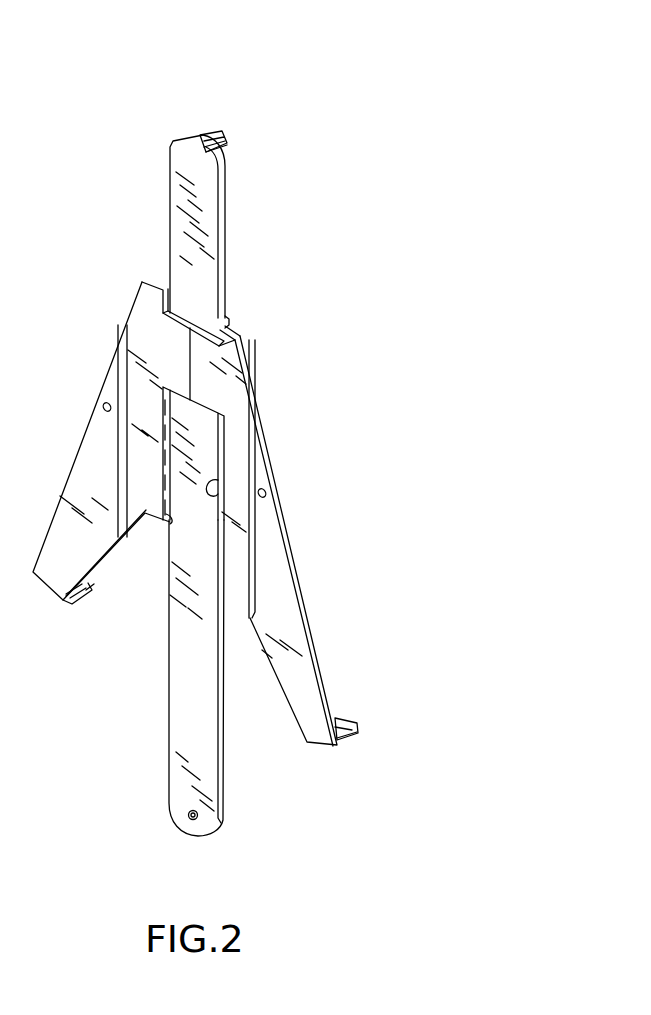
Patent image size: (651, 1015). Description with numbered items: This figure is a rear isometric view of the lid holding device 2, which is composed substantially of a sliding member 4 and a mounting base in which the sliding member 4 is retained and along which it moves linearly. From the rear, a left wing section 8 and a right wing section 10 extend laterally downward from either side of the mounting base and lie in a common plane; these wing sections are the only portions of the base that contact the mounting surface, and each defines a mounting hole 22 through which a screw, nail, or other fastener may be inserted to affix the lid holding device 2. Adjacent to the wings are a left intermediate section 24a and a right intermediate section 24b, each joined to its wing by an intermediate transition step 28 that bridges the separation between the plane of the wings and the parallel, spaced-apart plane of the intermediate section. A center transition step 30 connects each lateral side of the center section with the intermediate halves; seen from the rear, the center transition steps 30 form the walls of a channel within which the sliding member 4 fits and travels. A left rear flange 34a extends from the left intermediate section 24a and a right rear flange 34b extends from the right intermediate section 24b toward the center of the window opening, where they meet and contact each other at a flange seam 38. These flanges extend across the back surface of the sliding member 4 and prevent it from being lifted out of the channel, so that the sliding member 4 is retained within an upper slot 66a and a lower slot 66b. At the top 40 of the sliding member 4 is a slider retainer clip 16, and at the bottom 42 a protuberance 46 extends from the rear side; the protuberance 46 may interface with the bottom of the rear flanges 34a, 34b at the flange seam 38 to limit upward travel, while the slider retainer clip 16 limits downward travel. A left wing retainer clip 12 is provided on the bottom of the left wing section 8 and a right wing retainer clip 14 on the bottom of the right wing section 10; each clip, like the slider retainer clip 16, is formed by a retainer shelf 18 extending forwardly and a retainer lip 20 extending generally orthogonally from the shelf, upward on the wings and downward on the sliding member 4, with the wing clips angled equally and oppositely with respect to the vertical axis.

The lid holding device 2 is at (296, 200).
The sliding member 4 is at (224, 247).
The left wing section 8 is at (288, 598).
The right wing section 10 is at (74, 476).
The left wing retainer clip 12 is at (358, 730).
The right wing retainer clip 14 is at (70, 604).
The slider retainer clip 16 is at (218, 133).
The retainer shelf 18 is at (206, 136).
The retainer lip 20 is at (228, 144).
The mounting hole 22 is at (106, 407).
The left intermediate section 24a is at (228, 430).
The right intermediate section 24b is at (154, 452).
The intermediate transition step 28 is at (124, 376).
The center transition step 30 is at (228, 321).
The left rear flange 34a is at (210, 380).
The right rear flange 34b is at (182, 337).
The flange seam 38 is at (207, 347).
The top of the sliding member 40 is at (233, 104).
The bottom of the sliding member 42 is at (207, 847).
The protuberance 46 is at (190, 818).
The upper slot 66a is at (182, 313).
The lower slot 66b is at (193, 430).